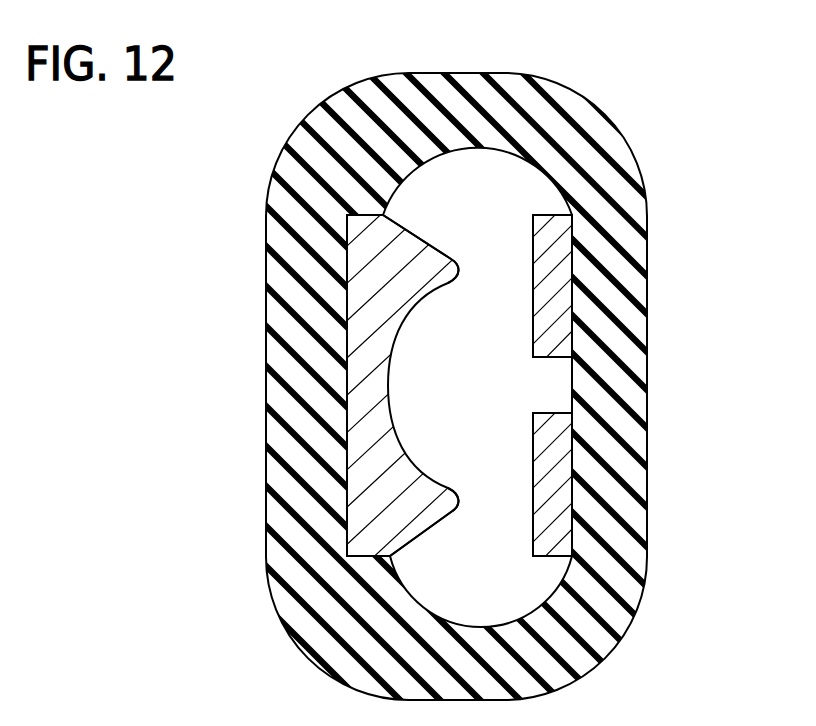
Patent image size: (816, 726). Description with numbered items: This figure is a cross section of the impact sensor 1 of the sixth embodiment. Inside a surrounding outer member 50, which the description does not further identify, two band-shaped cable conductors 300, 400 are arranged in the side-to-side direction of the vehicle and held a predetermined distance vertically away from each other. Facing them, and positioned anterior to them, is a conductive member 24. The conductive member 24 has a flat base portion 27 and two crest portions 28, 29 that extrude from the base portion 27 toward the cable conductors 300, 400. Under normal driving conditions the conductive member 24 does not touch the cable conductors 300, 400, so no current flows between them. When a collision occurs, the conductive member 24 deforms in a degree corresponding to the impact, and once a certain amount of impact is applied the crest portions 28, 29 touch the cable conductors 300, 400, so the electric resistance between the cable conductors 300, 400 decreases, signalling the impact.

The impact sensor 1 is at (238, 165).
The outer sheath 50 is at (578, 153).
The conductive member 24 is at (338, 345).
The crest portion 28 is at (445, 271).
The crest portion 29 is at (447, 502).
The base portion 27 is at (365, 535).
The cable conductor 300 is at (549, 295).
The cable conductor 400 is at (550, 502).